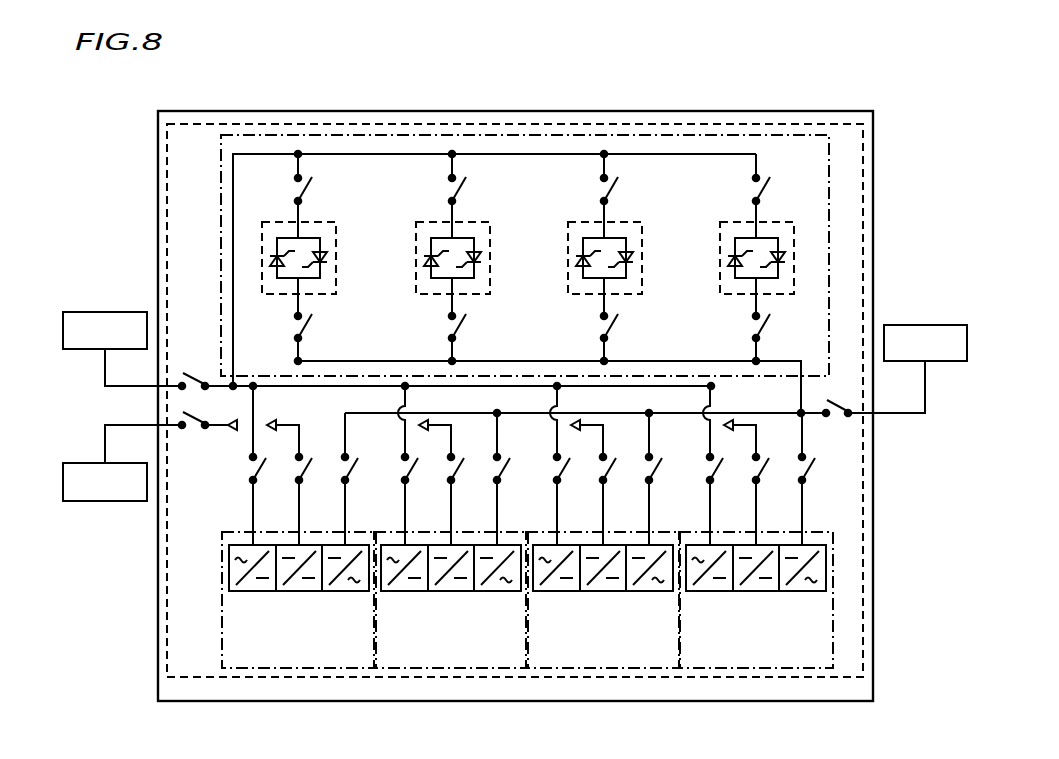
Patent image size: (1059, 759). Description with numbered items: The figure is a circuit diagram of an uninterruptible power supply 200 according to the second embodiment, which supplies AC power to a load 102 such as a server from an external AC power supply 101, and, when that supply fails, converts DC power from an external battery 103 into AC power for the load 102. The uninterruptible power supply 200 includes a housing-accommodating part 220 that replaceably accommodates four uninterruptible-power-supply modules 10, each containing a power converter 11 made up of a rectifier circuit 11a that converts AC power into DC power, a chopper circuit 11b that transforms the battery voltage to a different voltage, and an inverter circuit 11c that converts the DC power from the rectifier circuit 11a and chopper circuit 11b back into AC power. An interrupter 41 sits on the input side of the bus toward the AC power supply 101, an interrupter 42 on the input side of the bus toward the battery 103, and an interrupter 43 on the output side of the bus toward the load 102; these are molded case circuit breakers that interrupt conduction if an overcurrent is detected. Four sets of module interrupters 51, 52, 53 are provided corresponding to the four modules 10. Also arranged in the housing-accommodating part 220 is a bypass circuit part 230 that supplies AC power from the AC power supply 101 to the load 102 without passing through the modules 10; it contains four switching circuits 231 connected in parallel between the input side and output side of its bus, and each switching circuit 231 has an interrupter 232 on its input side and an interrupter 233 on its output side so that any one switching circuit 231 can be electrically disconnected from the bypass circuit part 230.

The uninterruptible power supply 200 is at (850, 111).
The housing-accommodating part 220 is at (748, 124).
The bypass circuit part 230 is at (637, 134).
The switching circuit 231 is at (338, 273).
The interrupter 232 is at (317, 190).
The interrupter 233 is at (317, 327).
The AC power supply 101 is at (87, 312).
The load 102 is at (918, 325).
The battery 103 is at (105, 501).
The interrupter 41 is at (185, 361).
The interrupter 42 is at (195, 439).
The interrupter 43 is at (836, 423).
The uninterruptible-power-supply module 10 is at (292, 670).
The power converter 11 is at (527, 601).
The rectifier circuit 11a is at (248, 592).
The chopper circuit 11b is at (294, 592).
The inverter circuit 11c is at (574, 587).
The interrupter 51 is at (244, 476).
The interrupter 52 is at (290, 476).
The interrupter 53 is at (336, 476).